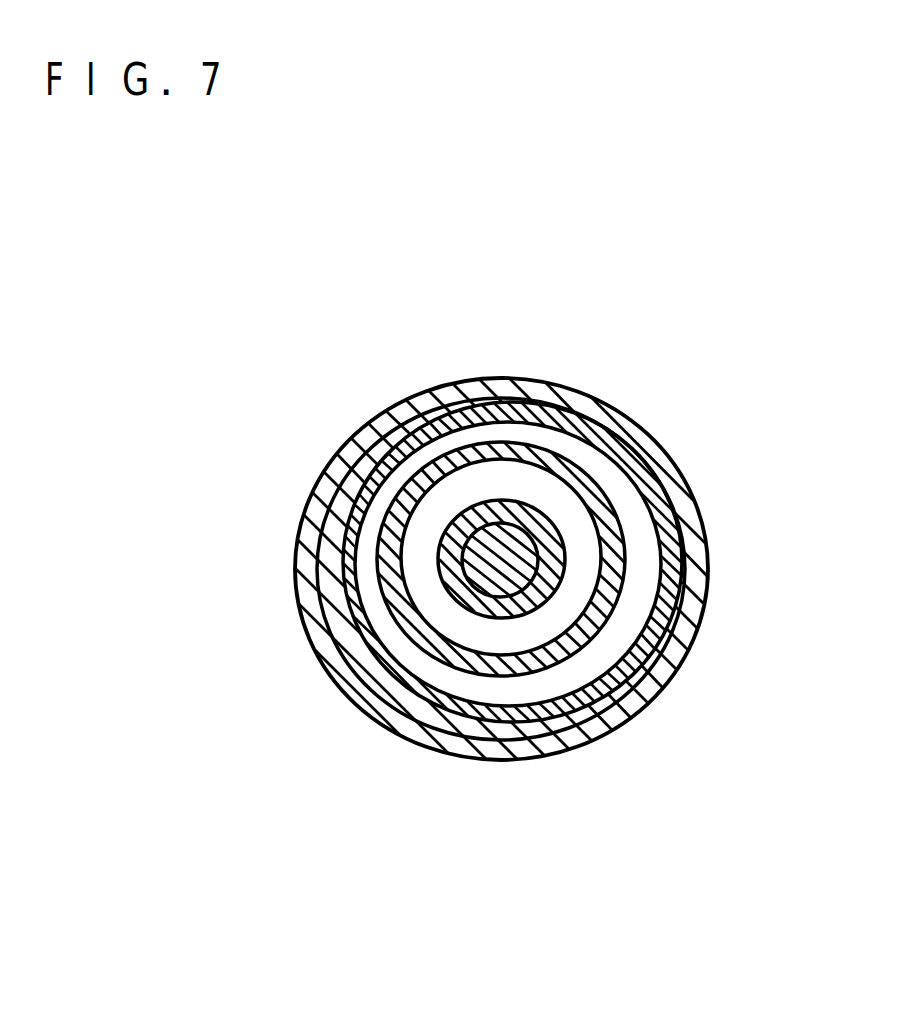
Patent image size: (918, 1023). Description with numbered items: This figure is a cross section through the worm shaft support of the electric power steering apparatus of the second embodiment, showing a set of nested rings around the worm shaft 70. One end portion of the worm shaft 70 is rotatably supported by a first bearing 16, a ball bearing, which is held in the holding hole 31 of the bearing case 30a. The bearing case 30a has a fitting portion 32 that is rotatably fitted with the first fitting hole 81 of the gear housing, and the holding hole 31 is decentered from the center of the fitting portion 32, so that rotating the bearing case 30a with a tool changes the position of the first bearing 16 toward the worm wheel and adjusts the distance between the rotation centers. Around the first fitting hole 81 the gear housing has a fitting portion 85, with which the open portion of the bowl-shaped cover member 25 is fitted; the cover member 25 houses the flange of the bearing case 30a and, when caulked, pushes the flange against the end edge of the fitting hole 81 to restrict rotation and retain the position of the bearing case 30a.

The cover member 25 is at (490, 760).
The fitting portion 85 is at (488, 380).
The first fitting hole 81 is at (556, 410).
The fitting portion 32 is at (546, 424).
The holding hole 31 is at (598, 486).
The bearing case 30a is at (652, 528).
The first bearing 16 is at (640, 597).
The worm shaft 70 is at (530, 575).